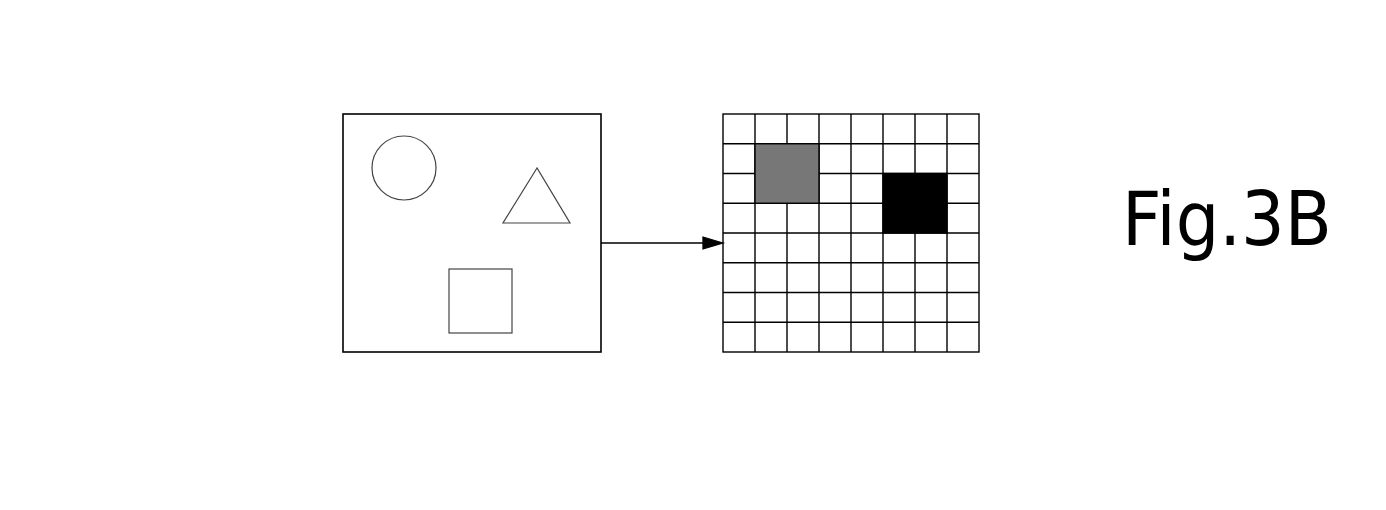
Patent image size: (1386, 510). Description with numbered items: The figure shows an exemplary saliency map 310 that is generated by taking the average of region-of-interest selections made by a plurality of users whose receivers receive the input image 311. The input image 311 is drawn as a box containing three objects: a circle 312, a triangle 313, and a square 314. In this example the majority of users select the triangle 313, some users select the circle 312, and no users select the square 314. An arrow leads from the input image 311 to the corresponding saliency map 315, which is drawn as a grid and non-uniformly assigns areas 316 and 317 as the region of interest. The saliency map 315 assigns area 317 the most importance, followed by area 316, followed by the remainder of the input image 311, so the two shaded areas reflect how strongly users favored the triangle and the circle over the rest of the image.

The saliency map 310 is at (224, 239).
The input image 311 is at (343, 324).
The circle 312 is at (403, 167).
The triangle 313 is at (536, 205).
The square 314 is at (480, 300).
The saliency map 315 is at (723, 328).
The area 316 is at (793, 144).
The area 317 is at (918, 174).